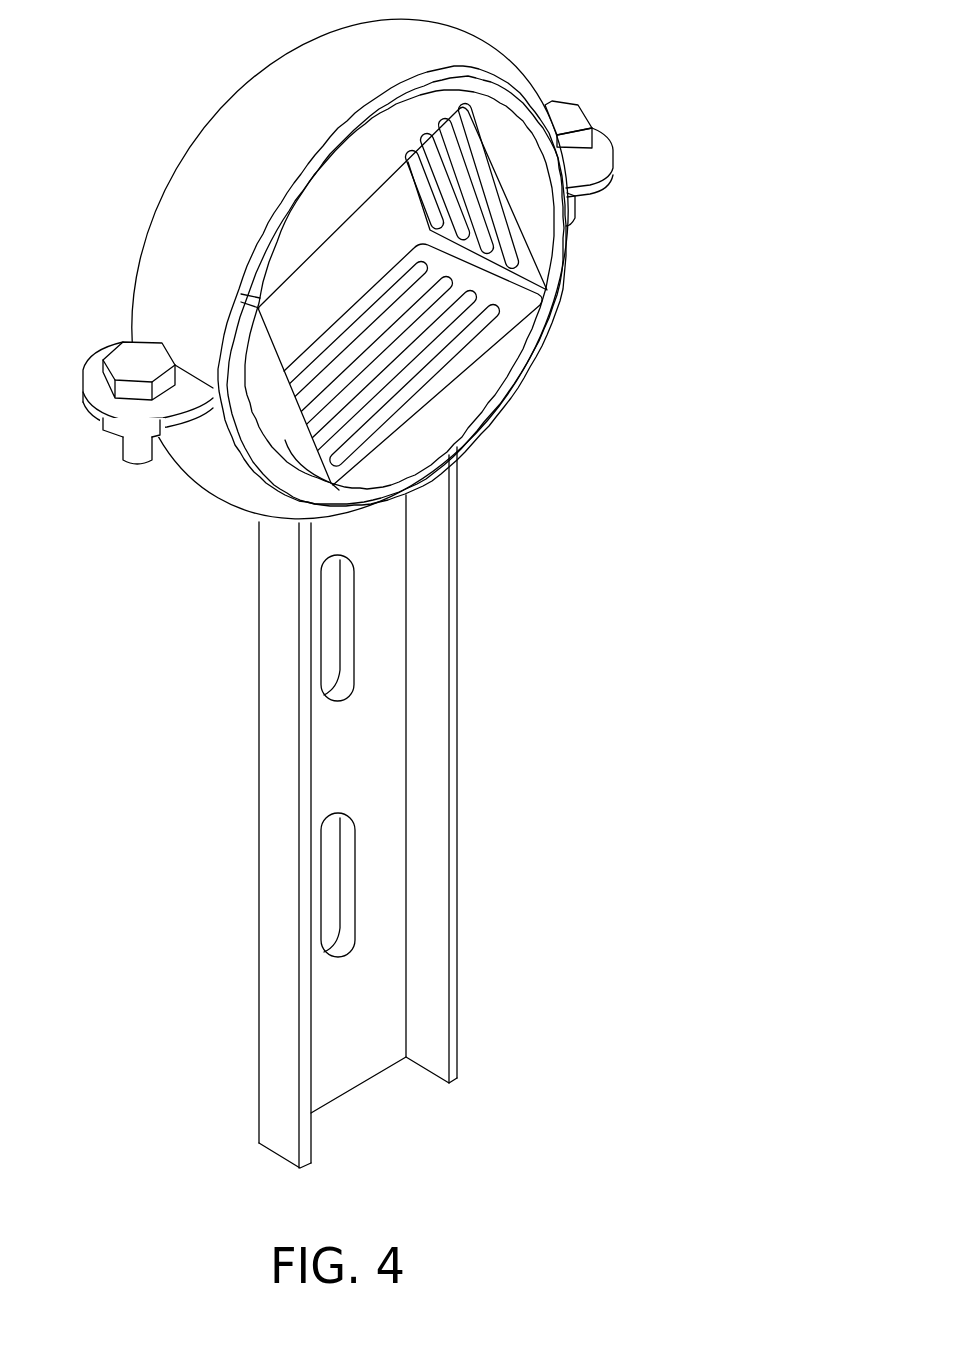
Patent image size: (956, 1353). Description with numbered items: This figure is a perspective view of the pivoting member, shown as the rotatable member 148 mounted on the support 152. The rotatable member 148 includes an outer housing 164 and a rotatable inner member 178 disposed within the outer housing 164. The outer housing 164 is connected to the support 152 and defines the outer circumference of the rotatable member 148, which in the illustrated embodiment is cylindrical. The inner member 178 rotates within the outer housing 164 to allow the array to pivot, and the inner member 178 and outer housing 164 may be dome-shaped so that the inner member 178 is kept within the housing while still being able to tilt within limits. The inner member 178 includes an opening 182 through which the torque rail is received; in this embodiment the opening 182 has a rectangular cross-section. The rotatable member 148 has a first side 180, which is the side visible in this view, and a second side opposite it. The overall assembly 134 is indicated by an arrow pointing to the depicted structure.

The drain assembly 134 is at (534, 987).
The support 152 is at (420, 807).
The outer housing 164 is at (248, 145).
The rotatable member 148 is at (567, 240).
The inner member 178 is at (435, 323).
The opening 182 is at (336, 241).
The first side 180 is at (403, 497).